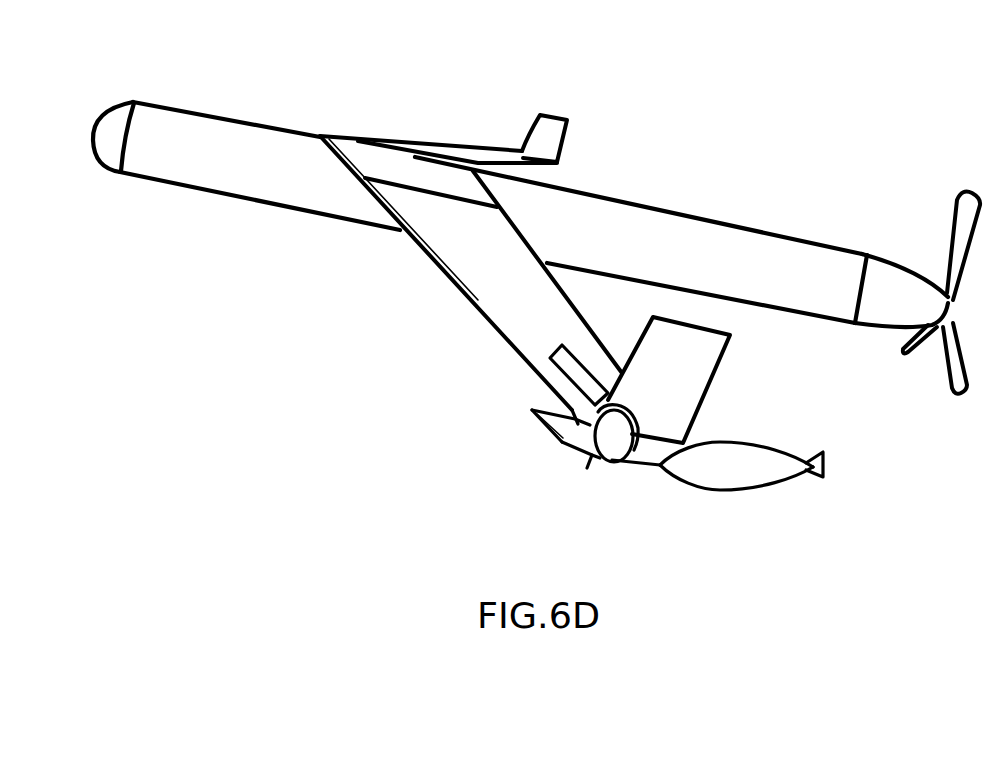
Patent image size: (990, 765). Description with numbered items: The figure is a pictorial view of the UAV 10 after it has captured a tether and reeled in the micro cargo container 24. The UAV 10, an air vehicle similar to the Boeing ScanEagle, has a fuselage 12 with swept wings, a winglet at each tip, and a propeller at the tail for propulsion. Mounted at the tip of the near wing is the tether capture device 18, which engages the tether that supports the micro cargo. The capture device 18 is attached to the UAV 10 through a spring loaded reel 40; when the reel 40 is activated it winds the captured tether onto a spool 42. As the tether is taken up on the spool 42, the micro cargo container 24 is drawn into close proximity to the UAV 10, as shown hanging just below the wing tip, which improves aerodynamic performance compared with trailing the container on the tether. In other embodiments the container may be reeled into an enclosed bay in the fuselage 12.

The UAV 10 is at (560, 82).
The fuselage 12 is at (670, 234).
The tether capture device 18 is at (588, 465).
The micro cargo container 24 is at (738, 470).
The spring loaded reel 40 is at (560, 387).
The spool 42 is at (622, 437).